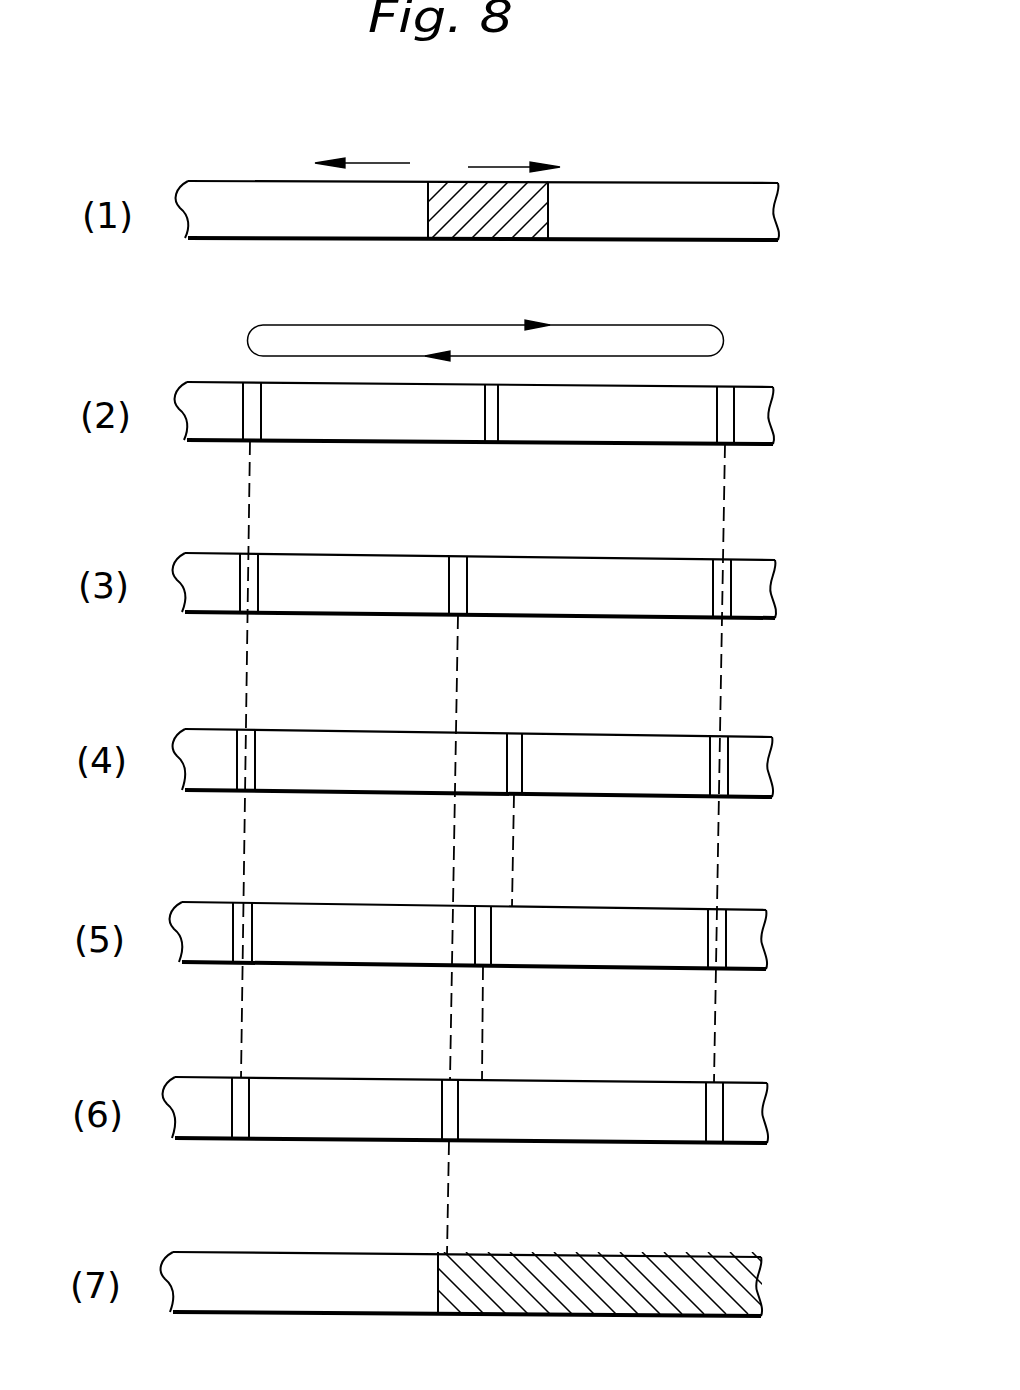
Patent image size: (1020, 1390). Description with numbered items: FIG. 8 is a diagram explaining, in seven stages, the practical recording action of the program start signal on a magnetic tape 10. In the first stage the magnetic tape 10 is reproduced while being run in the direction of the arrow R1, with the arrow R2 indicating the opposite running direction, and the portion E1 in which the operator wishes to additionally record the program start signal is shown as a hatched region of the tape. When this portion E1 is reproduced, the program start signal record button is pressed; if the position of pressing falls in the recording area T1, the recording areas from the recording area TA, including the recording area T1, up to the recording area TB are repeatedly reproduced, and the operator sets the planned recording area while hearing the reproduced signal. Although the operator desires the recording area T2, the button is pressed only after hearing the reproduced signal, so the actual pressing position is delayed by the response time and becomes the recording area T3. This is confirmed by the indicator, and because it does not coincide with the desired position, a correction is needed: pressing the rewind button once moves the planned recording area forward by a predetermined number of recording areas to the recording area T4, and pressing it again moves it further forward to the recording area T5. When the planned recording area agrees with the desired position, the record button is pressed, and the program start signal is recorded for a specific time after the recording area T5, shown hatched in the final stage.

The magnetic tape 10 is at (757, 190).
The portion E1 is at (498, 232).
The arrow R1 is at (362, 134).
The arrow R2 is at (516, 167).
The recording area TA is at (252, 424).
The recording area TB is at (724, 432).
The recording area T1 is at (492, 428).
The recording area T2 is at (457, 600).
The recording area T3 is at (513, 782).
The recording area T4 is at (482, 950).
The recording area T5 is at (452, 1128).